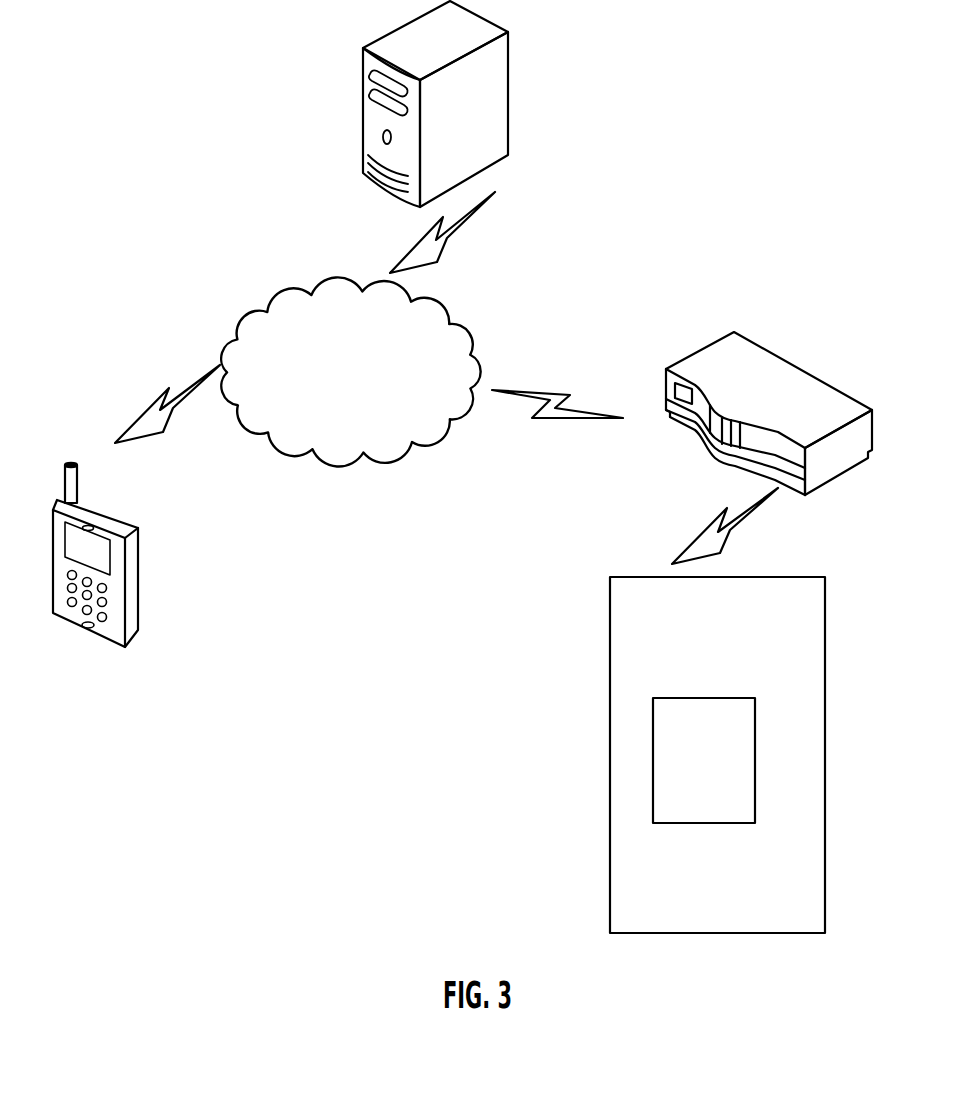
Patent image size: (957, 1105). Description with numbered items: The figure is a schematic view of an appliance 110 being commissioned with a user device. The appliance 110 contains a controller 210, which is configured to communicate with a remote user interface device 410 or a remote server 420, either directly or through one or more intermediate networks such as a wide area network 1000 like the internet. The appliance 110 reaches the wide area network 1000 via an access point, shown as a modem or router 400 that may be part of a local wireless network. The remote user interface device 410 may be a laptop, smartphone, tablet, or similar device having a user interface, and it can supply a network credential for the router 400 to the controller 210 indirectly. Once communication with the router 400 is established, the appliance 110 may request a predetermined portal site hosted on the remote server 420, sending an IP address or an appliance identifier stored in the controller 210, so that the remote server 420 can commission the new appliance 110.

The remote server 420 is at (496, 133).
The wide area network 1000 is at (350, 425).
The router 400 is at (718, 355).
The remote user interface device 410 is at (132, 617).
The appliance 110 is at (610, 828).
The controller 210 is at (653, 733).